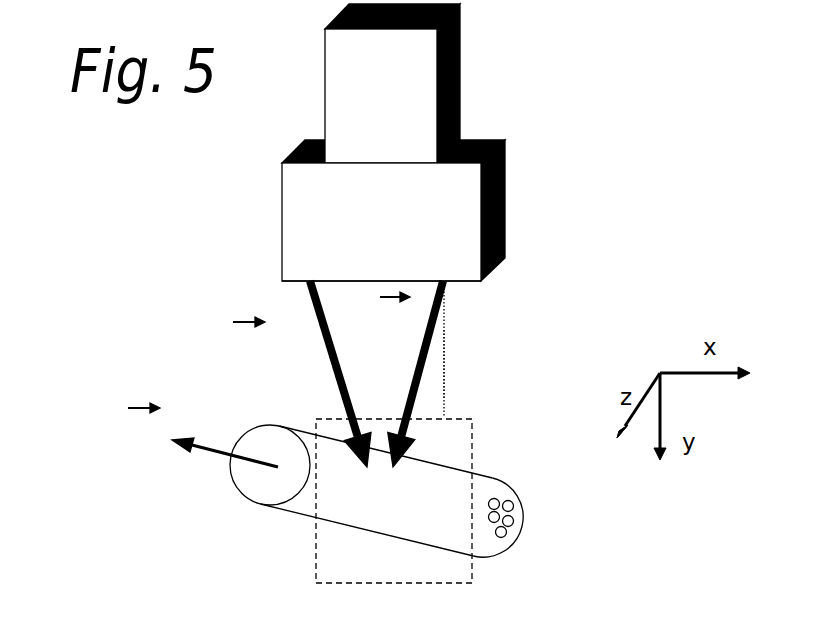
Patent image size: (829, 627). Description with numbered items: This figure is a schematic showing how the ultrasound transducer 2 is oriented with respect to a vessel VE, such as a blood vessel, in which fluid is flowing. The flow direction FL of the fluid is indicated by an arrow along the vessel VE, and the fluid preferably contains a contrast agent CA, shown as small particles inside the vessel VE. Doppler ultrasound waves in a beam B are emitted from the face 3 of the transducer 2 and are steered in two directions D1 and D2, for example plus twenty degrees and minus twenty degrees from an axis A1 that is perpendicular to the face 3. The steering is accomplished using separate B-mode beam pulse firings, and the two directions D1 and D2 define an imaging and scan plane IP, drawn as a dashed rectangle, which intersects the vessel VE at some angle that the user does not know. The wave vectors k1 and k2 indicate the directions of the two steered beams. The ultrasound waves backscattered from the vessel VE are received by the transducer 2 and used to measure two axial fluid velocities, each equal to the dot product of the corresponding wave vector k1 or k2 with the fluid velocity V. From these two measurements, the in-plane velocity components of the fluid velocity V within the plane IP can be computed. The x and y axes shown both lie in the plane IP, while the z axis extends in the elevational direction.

The transducer 2 is at (505, 173).
The face 3 is at (291, 287).
The beam B is at (313, 315).
The wave vector k1 is at (395, 316).
The wave vector k2 is at (249, 341).
The axis A1 is at (445, 347).
The direction D1 is at (340, 402).
The direction D2 is at (414, 380).
The imaging and scan plane IP is at (472, 430).
The vessel VE is at (518, 533).
The contrast agent CA is at (507, 517).
The flow direction FL is at (200, 455).
The fluid velocity V is at (144, 426).